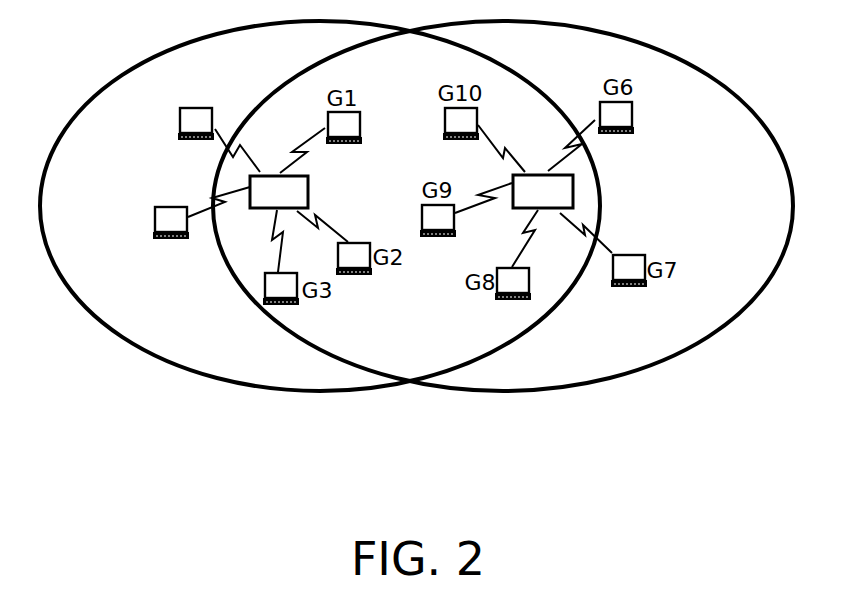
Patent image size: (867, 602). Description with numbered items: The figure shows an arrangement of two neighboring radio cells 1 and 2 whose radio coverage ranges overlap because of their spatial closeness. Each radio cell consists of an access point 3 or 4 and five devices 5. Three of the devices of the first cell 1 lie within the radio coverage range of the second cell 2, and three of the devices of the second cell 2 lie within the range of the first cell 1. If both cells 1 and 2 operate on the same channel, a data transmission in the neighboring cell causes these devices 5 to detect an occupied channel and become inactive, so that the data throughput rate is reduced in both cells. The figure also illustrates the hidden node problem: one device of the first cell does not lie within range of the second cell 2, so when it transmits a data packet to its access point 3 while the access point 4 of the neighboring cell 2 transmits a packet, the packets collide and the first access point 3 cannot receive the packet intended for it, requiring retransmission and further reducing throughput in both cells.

The first radio cell 1 is at (309, 392).
The second radio cell 2 is at (502, 392).
The access point 3 is at (275, 176).
The access point 4 is at (543, 175).
The devices 5 is at (194, 108).